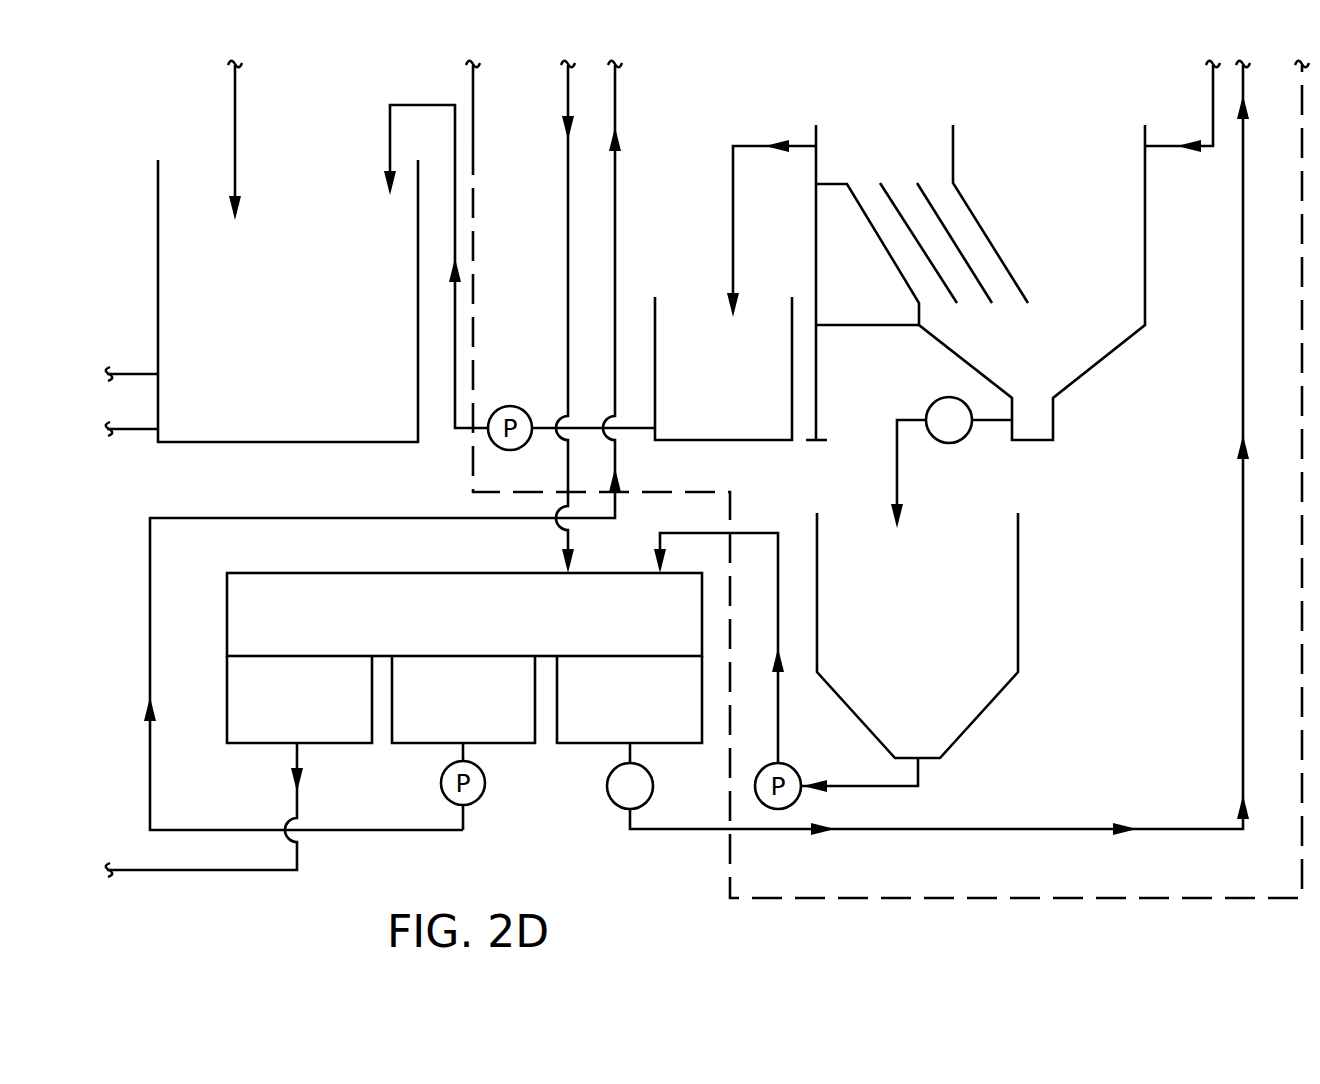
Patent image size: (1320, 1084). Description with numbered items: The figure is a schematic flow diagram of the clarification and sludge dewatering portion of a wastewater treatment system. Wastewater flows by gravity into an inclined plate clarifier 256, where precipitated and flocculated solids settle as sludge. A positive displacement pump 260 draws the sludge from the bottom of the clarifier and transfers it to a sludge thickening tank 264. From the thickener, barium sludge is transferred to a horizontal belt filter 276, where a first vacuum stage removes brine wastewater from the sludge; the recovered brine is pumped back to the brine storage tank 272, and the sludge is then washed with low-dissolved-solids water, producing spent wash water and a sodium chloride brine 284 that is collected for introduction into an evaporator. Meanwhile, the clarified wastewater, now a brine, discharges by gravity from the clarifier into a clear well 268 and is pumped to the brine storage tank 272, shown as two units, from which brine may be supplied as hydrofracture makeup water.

The brine storage tank 272 is at (158, 188).
The clear well 268 is at (655, 320).
The inclined plate clarifier 256 is at (1145, 232).
The positive displacement pump 260 is at (965, 440).
The sludge thickening tank 264 is at (1018, 596).
The horizontal belt filter 276 is at (227, 617).
The sodium chloride brine 284 is at (583, 745).